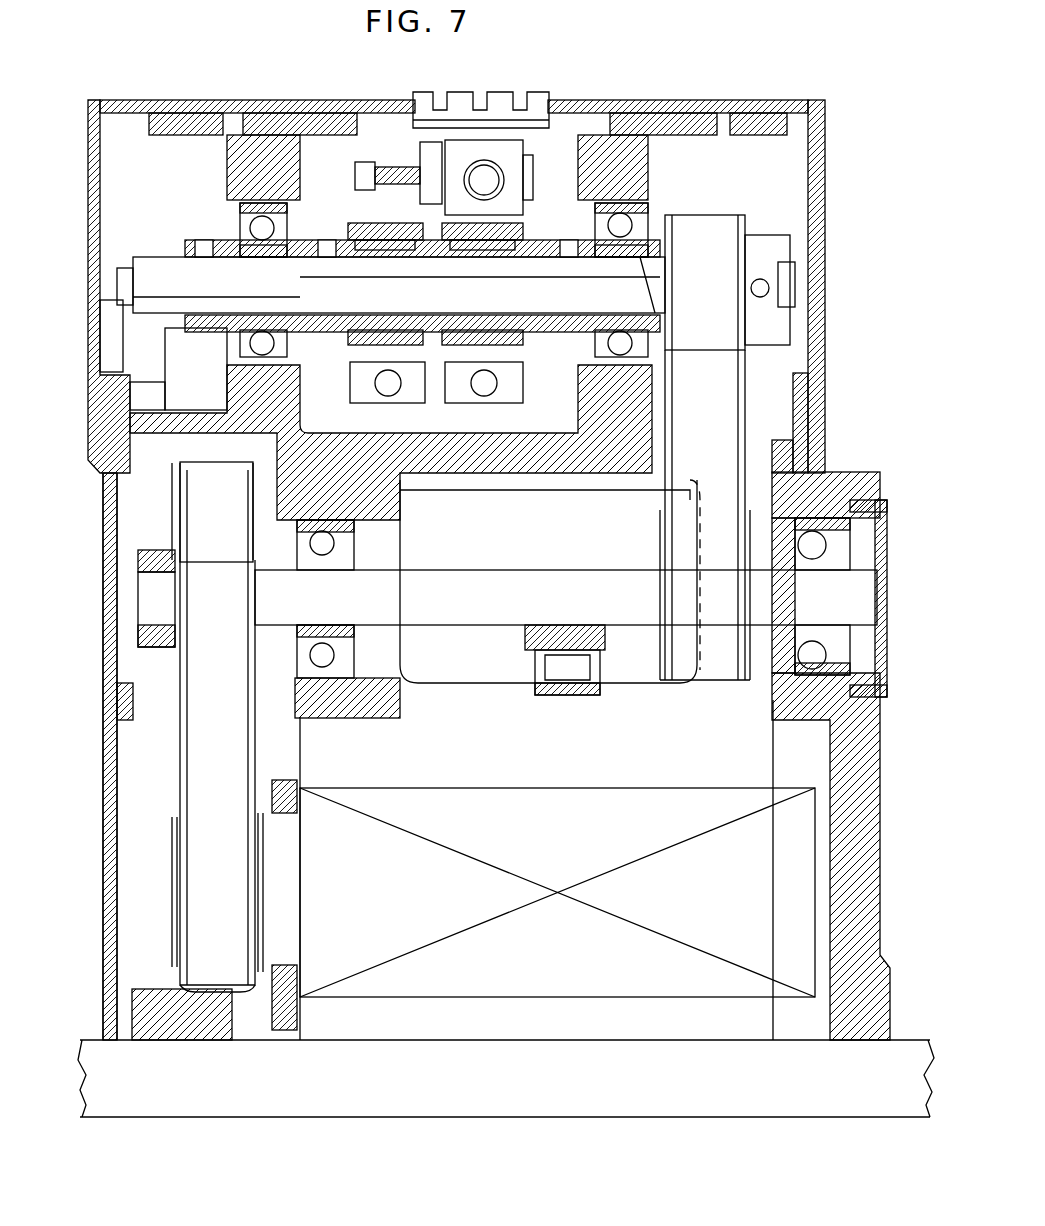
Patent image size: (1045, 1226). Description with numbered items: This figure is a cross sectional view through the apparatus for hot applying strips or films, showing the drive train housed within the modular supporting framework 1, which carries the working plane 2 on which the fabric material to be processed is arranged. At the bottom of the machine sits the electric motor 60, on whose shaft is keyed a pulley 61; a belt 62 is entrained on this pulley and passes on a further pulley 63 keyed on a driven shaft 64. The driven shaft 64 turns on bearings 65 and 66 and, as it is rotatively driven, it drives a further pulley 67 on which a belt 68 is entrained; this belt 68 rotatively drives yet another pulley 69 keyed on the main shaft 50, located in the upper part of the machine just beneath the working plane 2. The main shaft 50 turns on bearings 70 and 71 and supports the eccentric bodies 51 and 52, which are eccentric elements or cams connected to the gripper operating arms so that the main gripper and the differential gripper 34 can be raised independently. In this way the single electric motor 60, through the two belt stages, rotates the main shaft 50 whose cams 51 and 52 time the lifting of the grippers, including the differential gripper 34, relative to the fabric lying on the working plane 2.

The modular supporting framework 1 is at (870, 842).
The working plane 2 is at (180, 98).
The differential gripper 34 is at (538, 102).
The main shaft 50 is at (182, 290).
The eccentric body 51 is at (500, 340).
The eccentric body 52 is at (372, 345).
The electric motor 60 is at (565, 825).
The pulley 61 is at (175, 893).
The belt 62 is at (207, 727).
The pulley 63 is at (176, 512).
The driven shaft 64 is at (435, 592).
The bearing 65 is at (318, 538).
The bearing 66 is at (565, 690).
The pulley 67 is at (748, 525).
The belt 68 is at (712, 378).
The pulley 69 is at (748, 248).
The bearing 70 is at (268, 230).
The bearing 71 is at (615, 222).